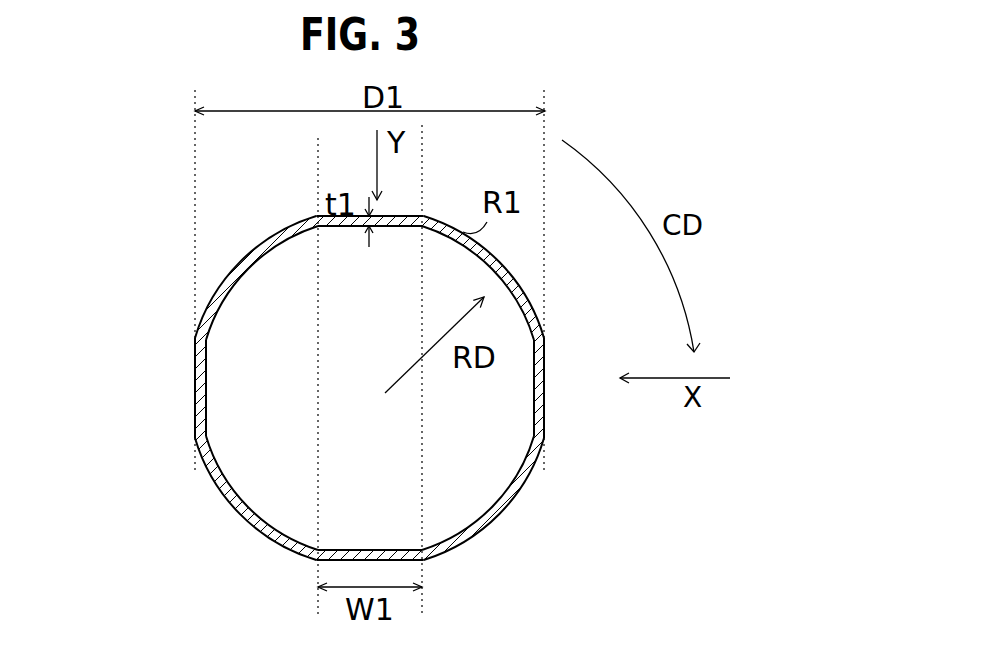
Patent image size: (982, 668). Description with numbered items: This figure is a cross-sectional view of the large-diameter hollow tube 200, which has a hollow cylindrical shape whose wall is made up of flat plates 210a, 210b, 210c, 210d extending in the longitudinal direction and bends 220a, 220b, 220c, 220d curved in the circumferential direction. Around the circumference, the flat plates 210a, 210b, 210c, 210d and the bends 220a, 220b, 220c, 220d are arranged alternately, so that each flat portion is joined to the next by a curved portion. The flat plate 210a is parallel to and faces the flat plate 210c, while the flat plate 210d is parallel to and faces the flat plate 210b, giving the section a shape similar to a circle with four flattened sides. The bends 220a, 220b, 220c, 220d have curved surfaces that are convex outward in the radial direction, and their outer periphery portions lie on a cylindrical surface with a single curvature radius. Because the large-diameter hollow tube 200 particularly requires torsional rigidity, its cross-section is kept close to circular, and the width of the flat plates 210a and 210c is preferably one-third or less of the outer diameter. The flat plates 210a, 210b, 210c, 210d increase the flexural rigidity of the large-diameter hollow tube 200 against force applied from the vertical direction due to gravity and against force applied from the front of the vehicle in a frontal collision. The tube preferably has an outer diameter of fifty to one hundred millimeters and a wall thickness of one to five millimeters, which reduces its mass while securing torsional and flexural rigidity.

The large-diameter hollow tube 200 is at (232, 211).
The flat plate 210a is at (405, 217).
The flat plate 210b is at (544, 387).
The flat plate 210c is at (345, 561).
The flat plate 210d is at (195, 407).
The bend 220a is at (541, 283).
The bend 220b is at (497, 518).
The bend 220c is at (250, 531).
The bend 220d is at (228, 271).